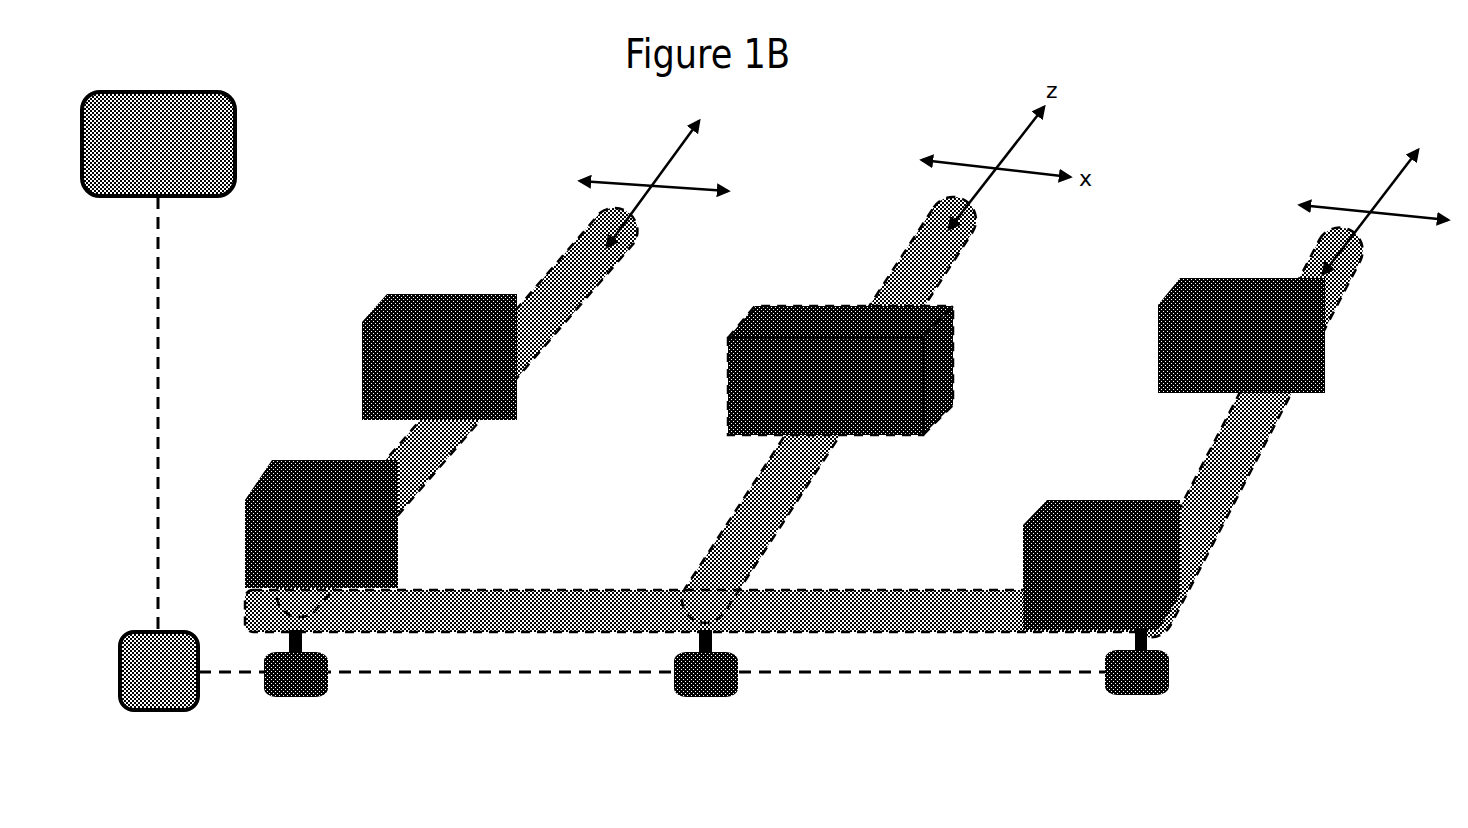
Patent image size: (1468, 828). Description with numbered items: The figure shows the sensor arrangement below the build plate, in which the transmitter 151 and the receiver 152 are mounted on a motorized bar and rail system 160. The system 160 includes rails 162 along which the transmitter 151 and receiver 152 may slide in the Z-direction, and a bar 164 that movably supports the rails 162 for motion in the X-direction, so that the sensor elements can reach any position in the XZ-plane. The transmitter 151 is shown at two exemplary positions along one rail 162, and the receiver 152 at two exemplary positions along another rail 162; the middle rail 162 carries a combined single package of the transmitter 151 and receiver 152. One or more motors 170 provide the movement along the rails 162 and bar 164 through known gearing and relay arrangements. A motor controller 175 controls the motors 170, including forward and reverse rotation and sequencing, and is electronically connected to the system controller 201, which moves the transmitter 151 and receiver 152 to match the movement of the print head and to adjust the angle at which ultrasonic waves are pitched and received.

The system controller 201 is at (158, 144).
The motor controller 175 is at (159, 671).
The transmitter 151 is at (580, 428).
The receiver 152 is at (1170, 445).
The rail 162 is at (566, 246).
The bar 164 is at (578, 596).
The motors 170 is at (302, 643).
The motorized bar and rail system 160 is at (787, 447).